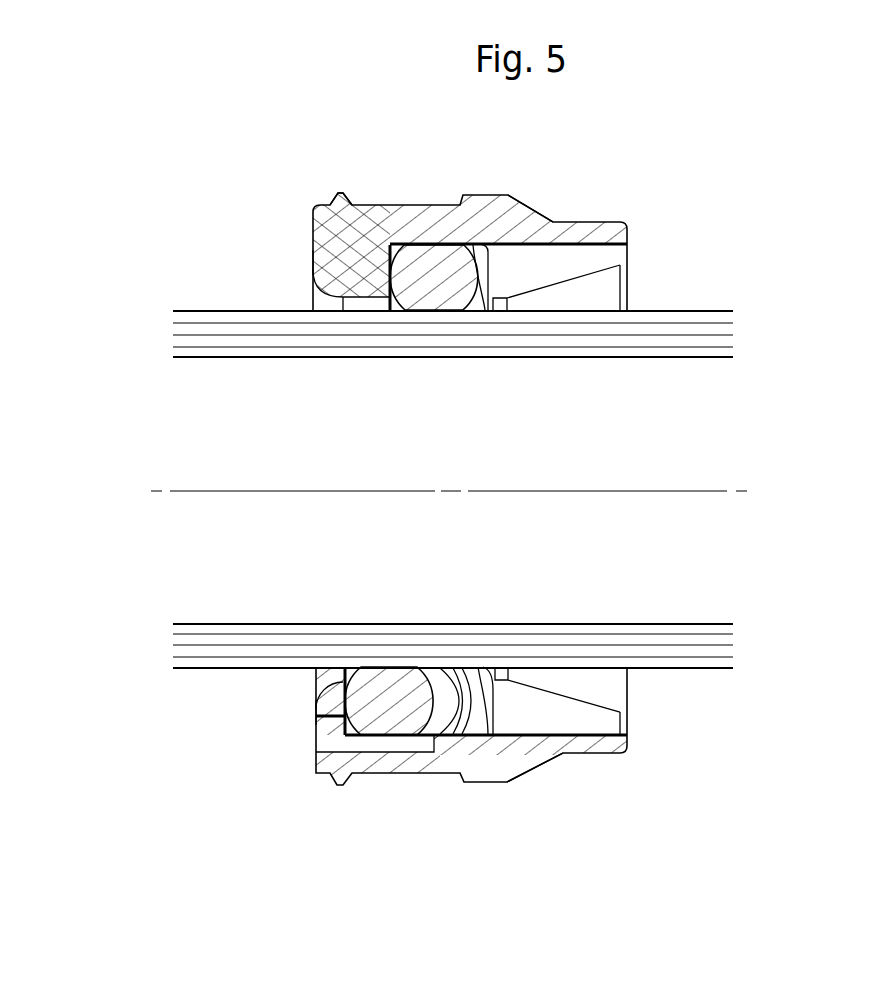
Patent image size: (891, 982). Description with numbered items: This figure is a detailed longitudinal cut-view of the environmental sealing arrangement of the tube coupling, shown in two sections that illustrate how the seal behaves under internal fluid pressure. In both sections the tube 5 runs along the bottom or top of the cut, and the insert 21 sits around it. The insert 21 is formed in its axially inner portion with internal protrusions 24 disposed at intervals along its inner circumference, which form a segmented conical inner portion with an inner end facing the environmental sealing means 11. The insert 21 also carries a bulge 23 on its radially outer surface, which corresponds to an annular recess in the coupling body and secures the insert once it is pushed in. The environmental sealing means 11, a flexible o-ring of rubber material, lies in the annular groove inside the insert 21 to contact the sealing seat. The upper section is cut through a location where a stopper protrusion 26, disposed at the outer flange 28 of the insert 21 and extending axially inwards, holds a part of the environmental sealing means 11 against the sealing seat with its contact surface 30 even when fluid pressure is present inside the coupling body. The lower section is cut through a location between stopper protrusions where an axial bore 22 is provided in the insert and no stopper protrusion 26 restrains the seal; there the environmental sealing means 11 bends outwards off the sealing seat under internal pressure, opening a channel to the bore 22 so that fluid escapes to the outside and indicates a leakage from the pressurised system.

The tube 5 is at (197, 332).
The environmental sealing means 11 is at (427, 273).
The insert 21 is at (427, 223).
The axial bore 22 is at (318, 758).
The bulge 23 is at (518, 205).
The internal protrusions 24 is at (553, 265).
The stopper protrusions 26 is at (373, 278).
The outer flange 28 is at (305, 260).
The contact surfaces 30 is at (313, 205).